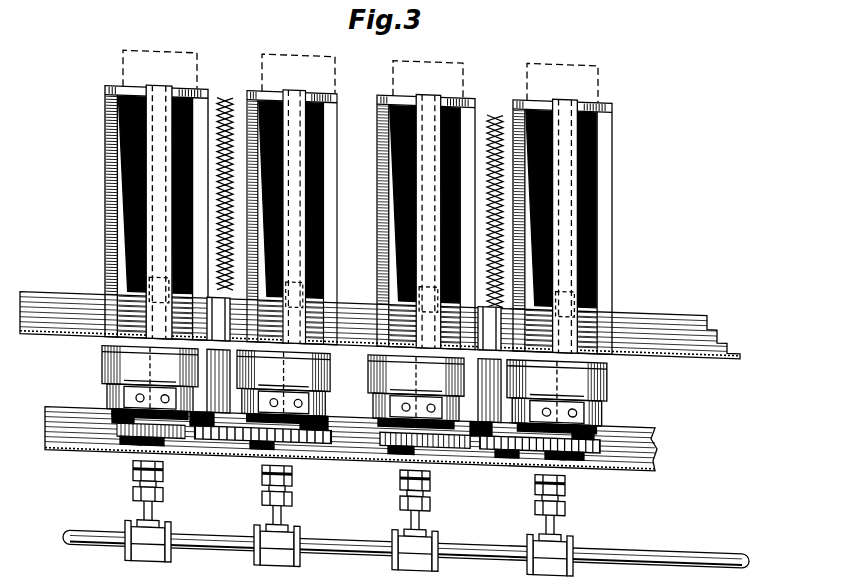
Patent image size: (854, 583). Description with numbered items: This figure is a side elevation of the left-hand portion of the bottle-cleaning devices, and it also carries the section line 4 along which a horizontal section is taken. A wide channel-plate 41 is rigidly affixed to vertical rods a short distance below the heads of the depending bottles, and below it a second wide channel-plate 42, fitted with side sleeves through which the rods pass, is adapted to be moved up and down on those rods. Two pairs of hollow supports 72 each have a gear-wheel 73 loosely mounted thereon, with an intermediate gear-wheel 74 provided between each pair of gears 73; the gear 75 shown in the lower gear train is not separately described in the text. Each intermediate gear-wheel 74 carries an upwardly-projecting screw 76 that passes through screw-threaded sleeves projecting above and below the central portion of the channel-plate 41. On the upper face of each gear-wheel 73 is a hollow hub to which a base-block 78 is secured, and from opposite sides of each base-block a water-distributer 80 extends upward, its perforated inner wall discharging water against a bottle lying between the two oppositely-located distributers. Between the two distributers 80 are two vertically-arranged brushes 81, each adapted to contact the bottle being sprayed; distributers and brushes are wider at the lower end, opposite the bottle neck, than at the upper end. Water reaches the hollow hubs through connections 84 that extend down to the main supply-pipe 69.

The section line 4- 4 is at (353, 410).
The channel-plate 41 is at (658, 299).
The channel-plate 42 is at (662, 425).
The main supply-pipe 69 is at (650, 522).
The hollow supports 72 is at (140, 440).
The gear-wheel 73 is at (118, 436).
The intermediate gear-wheel 74 is at (228, 450).
The gear 75 is at (205, 445).
The screw 76 is at (227, 100).
The base-block 78 is at (102, 384).
The water-distributer 80 is at (172, 89).
The brush 81 is at (118, 258).
The connections 84 is at (133, 490).